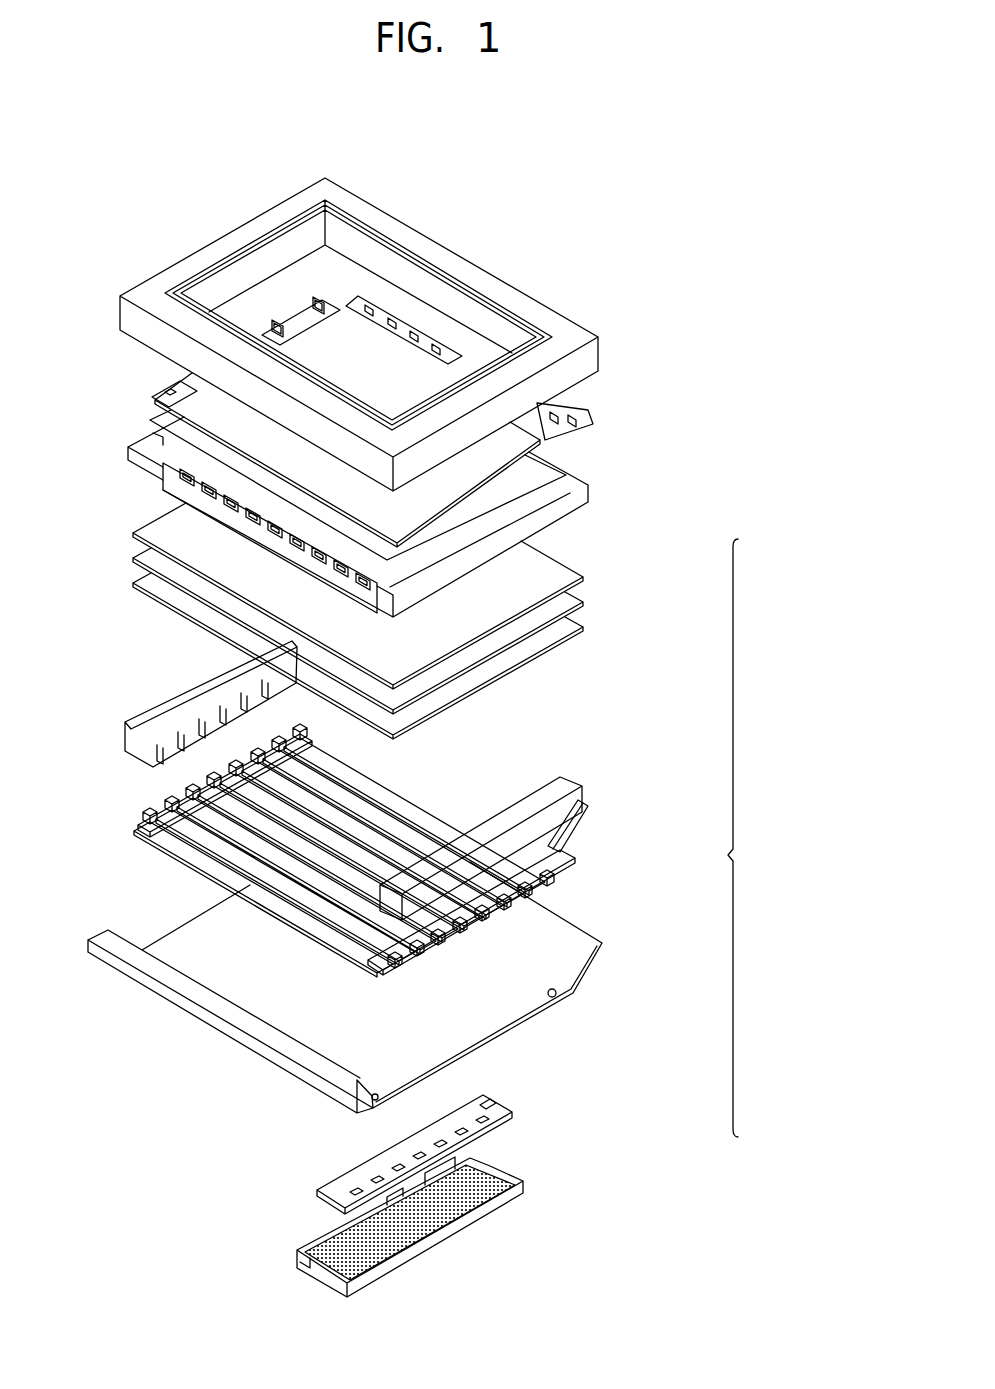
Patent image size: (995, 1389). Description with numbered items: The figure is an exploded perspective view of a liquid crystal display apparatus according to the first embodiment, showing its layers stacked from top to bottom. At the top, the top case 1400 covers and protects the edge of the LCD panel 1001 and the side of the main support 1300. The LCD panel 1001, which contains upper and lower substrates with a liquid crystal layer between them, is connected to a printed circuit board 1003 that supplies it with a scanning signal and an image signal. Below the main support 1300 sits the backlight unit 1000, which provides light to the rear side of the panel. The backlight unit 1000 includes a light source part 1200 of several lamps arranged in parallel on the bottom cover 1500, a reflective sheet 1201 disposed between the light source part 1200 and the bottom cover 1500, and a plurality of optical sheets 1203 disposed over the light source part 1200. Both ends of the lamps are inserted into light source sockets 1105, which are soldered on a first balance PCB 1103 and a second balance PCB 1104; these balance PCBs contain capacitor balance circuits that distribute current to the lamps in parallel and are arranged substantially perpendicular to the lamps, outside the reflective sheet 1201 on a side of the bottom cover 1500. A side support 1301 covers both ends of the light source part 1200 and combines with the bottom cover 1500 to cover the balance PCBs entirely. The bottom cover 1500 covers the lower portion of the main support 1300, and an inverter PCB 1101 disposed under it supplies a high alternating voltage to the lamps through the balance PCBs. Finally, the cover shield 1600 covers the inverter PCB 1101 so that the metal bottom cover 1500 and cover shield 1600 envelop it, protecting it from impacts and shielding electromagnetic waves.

The backlight unit 1000 is at (761, 838).
The LCD panel 1001 is at (547, 443).
The printed circuit board 1003 is at (600, 410).
The inverter PCB 1101 is at (510, 1112).
The first balance PCB 1103 is at (572, 872).
The second balance PCB 1104 is at (136, 826).
The light source sockets 1105 is at (568, 898).
The light source part 1200 is at (390, 768).
The reflective sheet 1201 is at (573, 818).
The optical sheets 1203 is at (602, 566).
The main support 1300 is at (560, 512).
The side support 1301 is at (570, 790).
The top case 1400 is at (583, 357).
The bottom cover 1500 is at (568, 962).
The cover shield 1600 is at (520, 1187).